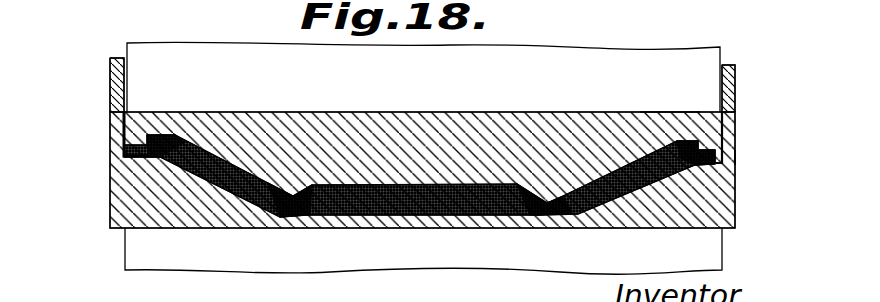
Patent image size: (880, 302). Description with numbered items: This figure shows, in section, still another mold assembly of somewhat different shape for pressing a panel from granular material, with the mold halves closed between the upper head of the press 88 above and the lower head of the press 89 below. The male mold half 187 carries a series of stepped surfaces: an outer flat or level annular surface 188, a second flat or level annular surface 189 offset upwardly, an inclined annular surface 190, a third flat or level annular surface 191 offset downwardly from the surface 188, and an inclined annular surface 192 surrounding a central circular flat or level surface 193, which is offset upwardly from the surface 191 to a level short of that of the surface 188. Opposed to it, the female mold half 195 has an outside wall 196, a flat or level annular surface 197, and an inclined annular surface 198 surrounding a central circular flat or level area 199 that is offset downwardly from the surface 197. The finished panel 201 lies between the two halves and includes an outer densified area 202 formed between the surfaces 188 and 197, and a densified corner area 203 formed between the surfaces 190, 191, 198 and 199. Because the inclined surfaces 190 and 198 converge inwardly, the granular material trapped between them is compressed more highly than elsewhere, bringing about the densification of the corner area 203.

The upper head of the press 88 is at (608, 24).
The lower head of the press 89 is at (422, 262).
The male mold half 187 is at (656, 111).
The outer flat annular surface 188 is at (698, 145).
The second flat annular surface 189 is at (163, 134).
The inclined annular surface 190 is at (596, 191).
The third flat annular surface 191 is at (552, 202).
The inclined annular surface 192 is at (311, 195).
The central circular flat surface 193 is at (421, 184).
The female mold half 195 is at (737, 152).
The outside wall 196 is at (736, 88).
The flat annular surface 197 is at (712, 166).
The inclined annular surface 198 is at (672, 172).
The central circular flat area 199 is at (544, 218).
The finished panel 201 is at (452, 211).
The outer densified area 202 is at (147, 157).
The densified corner area 203 is at (297, 214).